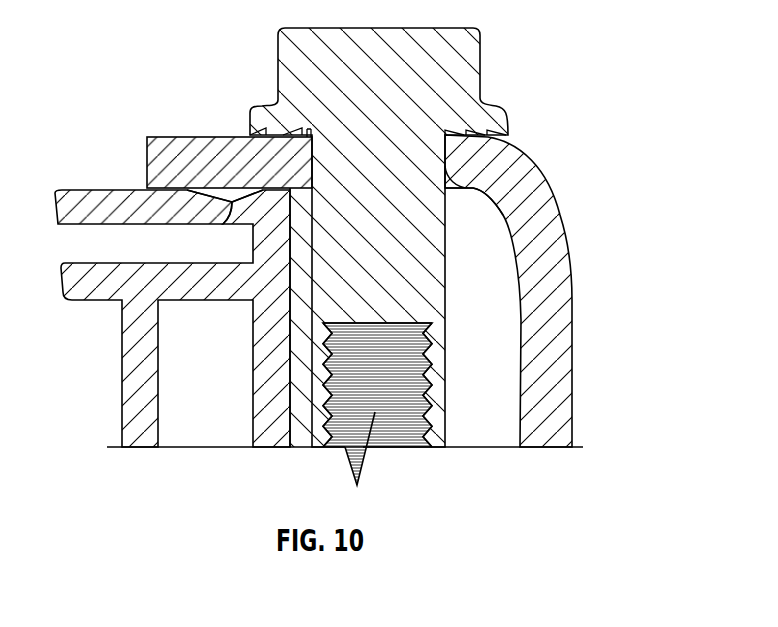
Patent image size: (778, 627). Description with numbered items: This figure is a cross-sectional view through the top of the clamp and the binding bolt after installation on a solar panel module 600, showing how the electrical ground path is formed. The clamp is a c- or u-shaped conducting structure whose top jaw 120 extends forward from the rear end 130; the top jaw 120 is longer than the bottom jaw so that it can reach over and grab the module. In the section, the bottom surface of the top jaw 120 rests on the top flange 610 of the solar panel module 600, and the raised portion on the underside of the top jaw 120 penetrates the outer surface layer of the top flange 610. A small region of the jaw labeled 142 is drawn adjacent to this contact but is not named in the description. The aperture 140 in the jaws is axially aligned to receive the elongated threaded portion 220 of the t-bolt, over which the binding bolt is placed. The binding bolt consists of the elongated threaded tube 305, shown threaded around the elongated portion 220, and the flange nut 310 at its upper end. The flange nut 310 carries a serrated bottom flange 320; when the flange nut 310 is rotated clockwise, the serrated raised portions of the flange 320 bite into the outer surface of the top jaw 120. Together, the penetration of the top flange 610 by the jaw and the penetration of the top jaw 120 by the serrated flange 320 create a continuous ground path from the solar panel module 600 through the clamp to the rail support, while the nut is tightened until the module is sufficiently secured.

The flange nut 310 is at (481, 70).
The serrated bottom flange 320 is at (500, 138).
The rear end 130 is at (573, 278).
The aperture 140 is at (471, 190).
The elongated threaded tube 305 is at (432, 356).
The elongated portion 220 is at (404, 436).
The top jaw 120 is at (173, 137).
The solar panel module 600 is at (251, 397).
The notch 142 is at (230, 205).
The top flange 610 is at (77, 226).